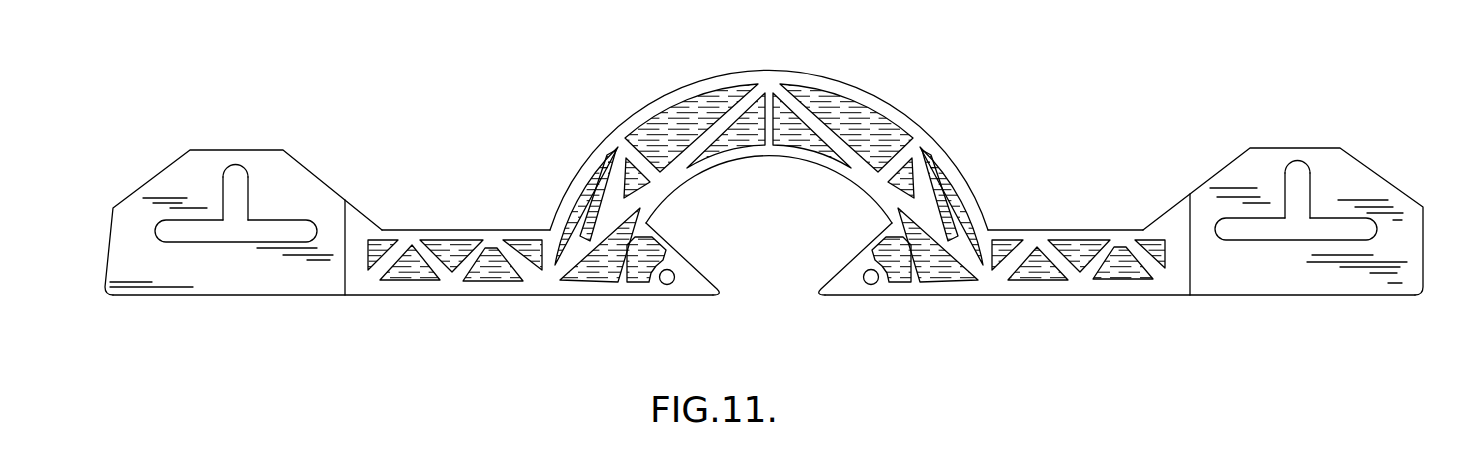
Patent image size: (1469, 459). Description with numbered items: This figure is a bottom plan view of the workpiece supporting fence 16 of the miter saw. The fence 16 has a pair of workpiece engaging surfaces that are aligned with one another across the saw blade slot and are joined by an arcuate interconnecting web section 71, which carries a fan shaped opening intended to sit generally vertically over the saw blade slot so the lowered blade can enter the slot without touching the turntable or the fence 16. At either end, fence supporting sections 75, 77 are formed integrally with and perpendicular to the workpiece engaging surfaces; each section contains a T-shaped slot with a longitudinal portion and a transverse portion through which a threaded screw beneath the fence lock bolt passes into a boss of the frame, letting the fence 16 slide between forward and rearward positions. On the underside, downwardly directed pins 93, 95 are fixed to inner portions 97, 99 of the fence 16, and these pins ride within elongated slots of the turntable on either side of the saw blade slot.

The workpiece supporting fence 16 is at (770, 188).
The arcuate interconnecting web section 71 is at (809, 72).
The fence supporting section 75 is at (1289, 221).
The fence supporting section 77 is at (243, 222).
The downwardly directed pin 93 is at (867, 284).
The downwardly directed pin 95 is at (672, 283).
The inner portion 97 is at (848, 279).
The inner portion 99 is at (685, 272).